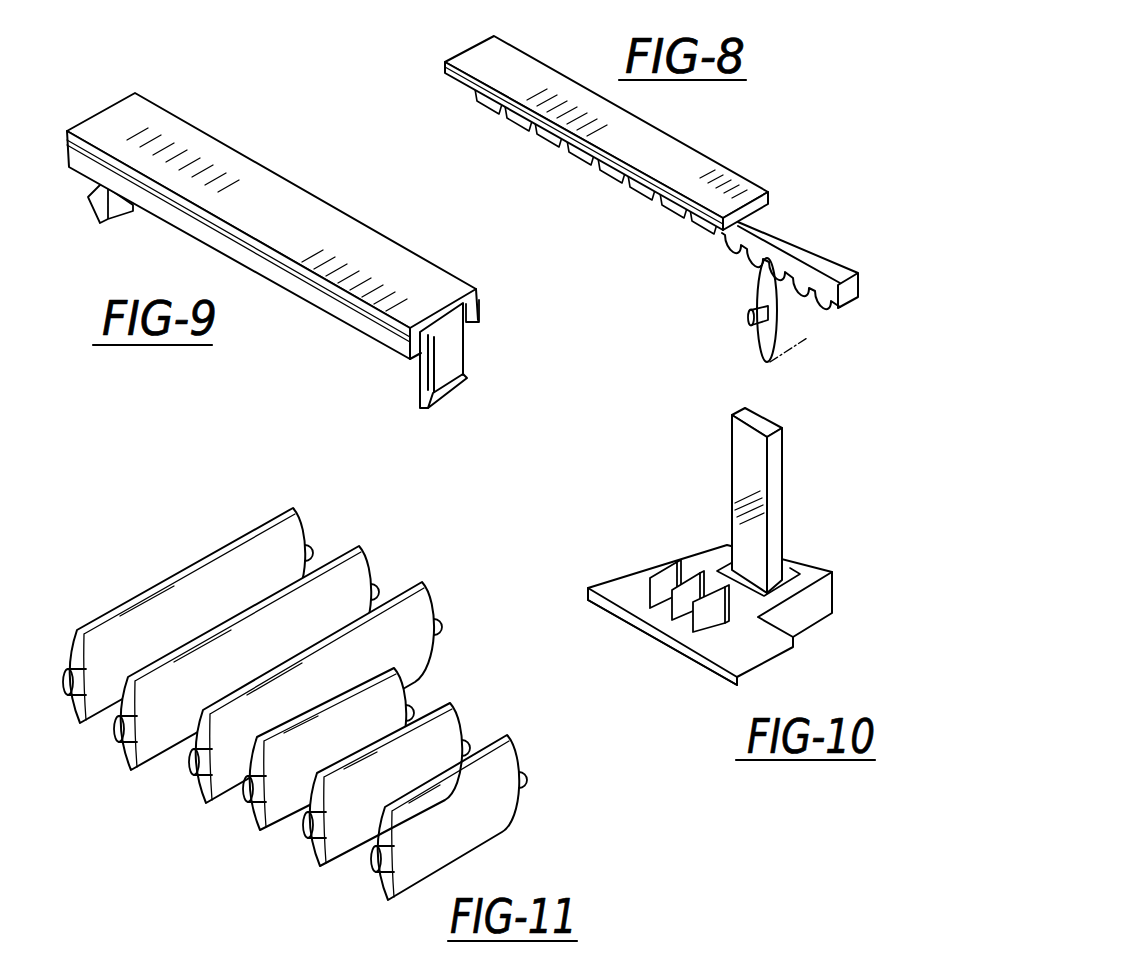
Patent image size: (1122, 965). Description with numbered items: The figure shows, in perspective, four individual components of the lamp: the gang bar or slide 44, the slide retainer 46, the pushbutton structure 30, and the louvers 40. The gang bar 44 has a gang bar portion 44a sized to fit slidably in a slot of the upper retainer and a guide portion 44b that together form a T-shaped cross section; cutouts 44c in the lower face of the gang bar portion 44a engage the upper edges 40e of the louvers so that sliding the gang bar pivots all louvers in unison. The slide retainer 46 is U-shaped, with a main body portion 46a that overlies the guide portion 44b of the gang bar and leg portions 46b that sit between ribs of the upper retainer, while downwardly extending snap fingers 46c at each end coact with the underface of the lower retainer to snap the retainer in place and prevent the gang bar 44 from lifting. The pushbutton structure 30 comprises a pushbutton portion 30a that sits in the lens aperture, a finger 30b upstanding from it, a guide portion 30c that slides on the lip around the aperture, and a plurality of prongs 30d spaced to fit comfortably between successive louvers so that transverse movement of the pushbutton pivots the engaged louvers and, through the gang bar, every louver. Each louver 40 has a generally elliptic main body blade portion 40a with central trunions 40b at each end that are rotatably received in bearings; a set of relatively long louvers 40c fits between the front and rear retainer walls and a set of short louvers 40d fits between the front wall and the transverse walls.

In FIG. 10, the pushbutton structure 30 is at (730, 582).
In FIG. 10, the pushbutton portion 30a is at (737, 651).
In FIG. 10, the finger 30b is at (772, 492).
In FIG. 10, the guide portion 30c is at (718, 667).
In FIG. 10, the prongs 30d is at (650, 590).
In FIG. 11, the louvers 40 is at (330, 685).
In FIG. 11, the main body blade portion 40a is at (242, 568).
In FIG. 8, the central trunions 40b is at (748, 318).
In FIG. 11, the central trunions 40b is at (122, 732).
In FIG. 11, the long louvers 40c is at (398, 581).
In FIG. 11, the short louvers 40d is at (441, 686).
In FIG. 8, the upper edges 40e is at (758, 268).
In FIG. 11, the upper edges 40e is at (302, 648).
In FIG. 8, the gang bar or slide 44 is at (610, 206).
In FIG. 8, the gang bar portion 44a is at (798, 273).
In FIG. 8, the guide portion 44b is at (768, 184).
In FIG. 8, the cutouts 44c is at (800, 290).
In FIG. 9, the slide retainer 46 is at (321, 228).
In FIG. 9, the main body portion 46a is at (290, 197).
In FIG. 9, the leg portions 46b is at (477, 380).
In FIG. 9, the snap fingers 46c is at (450, 400).